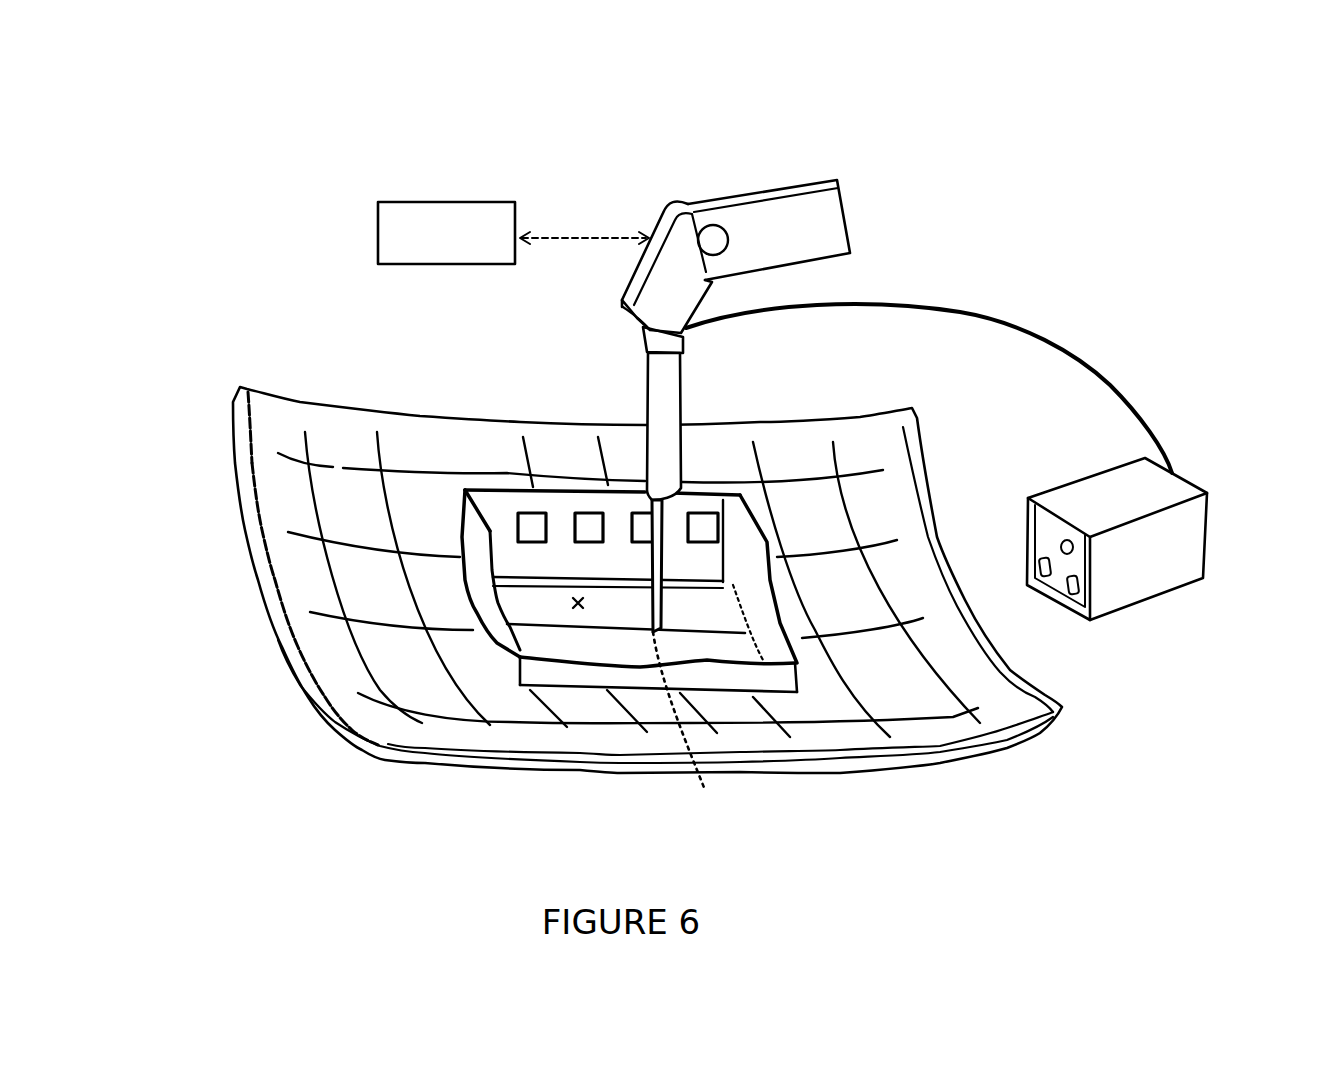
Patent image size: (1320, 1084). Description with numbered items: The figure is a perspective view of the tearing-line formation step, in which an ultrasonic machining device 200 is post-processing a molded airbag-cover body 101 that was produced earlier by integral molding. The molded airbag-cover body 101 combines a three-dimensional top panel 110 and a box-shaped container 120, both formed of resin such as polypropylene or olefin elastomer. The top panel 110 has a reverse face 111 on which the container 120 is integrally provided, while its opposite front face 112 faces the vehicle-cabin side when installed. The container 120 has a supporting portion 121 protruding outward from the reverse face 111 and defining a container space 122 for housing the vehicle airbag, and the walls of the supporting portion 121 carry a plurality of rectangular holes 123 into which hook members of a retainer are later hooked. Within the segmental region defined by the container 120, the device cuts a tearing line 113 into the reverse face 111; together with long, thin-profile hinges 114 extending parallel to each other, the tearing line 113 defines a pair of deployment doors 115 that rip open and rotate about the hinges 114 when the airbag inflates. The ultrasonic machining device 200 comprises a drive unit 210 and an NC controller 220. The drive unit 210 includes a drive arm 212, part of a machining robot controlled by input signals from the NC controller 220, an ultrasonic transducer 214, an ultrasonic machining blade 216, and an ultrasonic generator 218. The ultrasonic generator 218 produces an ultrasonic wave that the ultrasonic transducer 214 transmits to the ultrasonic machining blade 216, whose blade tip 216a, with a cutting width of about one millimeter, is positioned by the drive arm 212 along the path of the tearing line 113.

The ultrasonic machining device 200 is at (929, 144).
The molded airbag-cover body 101 is at (345, 378).
The top panel 110 is at (834, 421).
The reverse face 111 is at (270, 469).
The front face 112 is at (293, 517).
The tearing line 113 is at (558, 630).
The hinges 114 is at (731, 488).
The deployment doors 115 is at (533, 598).
The container 120 is at (468, 484).
The supporting portion 121 is at (503, 656).
The container space 122 is at (582, 612).
The rectangular holes 123 is at (587, 512).
The drive unit 210 is at (862, 290).
The drive arm 212 is at (759, 193).
The ultrasonic transducer 214 is at (647, 397).
The ultrasonic machining blade 216 is at (653, 630).
The blade tip 216a is at (696, 726).
The ultrasonic generator 218 is at (1173, 545).
The NC controller 220 is at (484, 202).